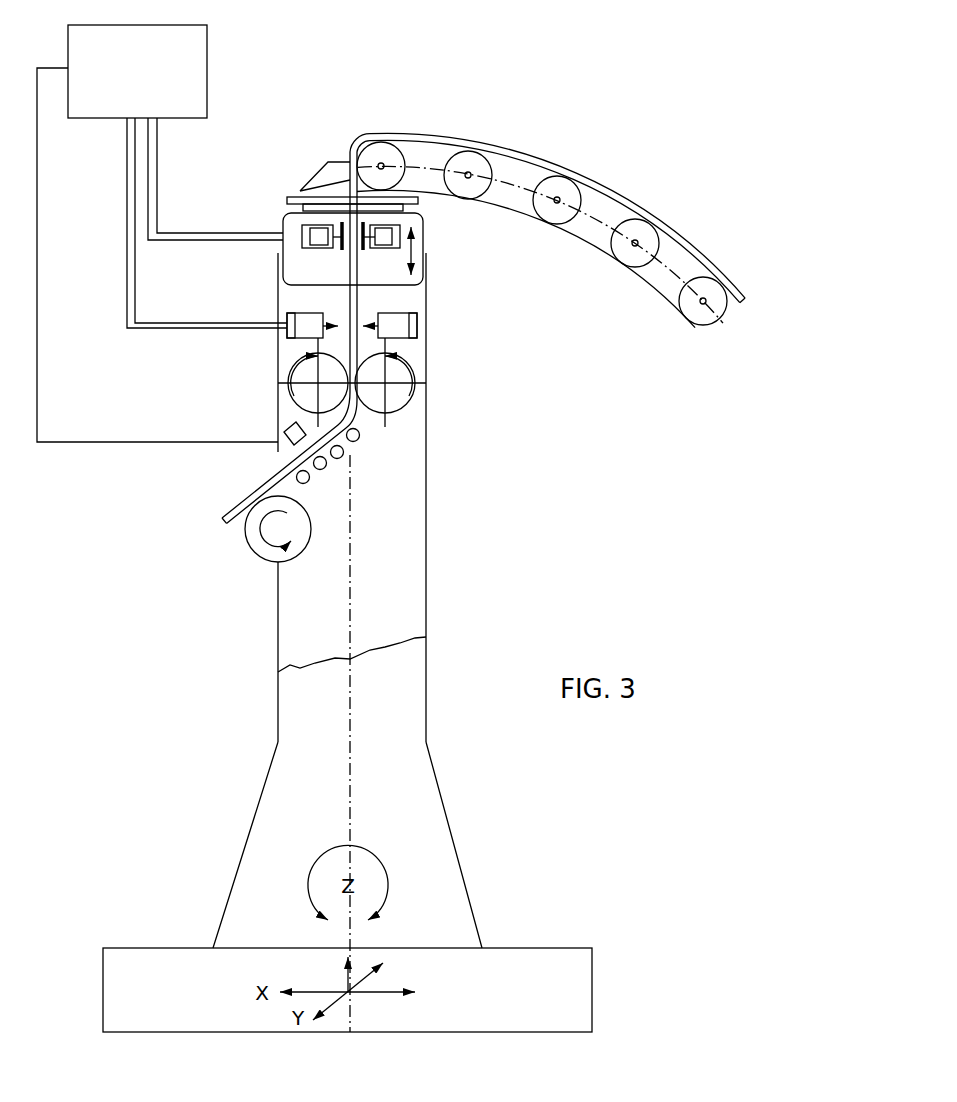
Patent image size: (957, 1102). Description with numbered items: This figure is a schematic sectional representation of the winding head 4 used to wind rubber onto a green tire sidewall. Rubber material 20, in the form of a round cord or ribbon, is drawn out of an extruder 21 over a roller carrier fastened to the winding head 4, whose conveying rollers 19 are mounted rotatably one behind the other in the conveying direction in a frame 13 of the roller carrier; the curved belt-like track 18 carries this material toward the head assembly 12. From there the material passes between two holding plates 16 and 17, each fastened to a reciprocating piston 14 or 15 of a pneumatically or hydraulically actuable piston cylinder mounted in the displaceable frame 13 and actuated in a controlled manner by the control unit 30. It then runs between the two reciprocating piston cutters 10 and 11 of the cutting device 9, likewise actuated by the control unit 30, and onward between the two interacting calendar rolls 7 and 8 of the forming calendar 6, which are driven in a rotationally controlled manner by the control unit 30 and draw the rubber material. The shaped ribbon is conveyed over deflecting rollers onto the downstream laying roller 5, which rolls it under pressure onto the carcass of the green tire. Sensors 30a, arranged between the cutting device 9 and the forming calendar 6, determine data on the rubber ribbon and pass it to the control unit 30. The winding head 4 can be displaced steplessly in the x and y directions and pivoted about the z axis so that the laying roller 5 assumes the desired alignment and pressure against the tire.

The winding head 4 is at (405, 702).
The laying roller 5 is at (264, 547).
The forming calendar 6 is at (350, 382).
The calendar roll 7 is at (305, 393).
The calendar roll 8 is at (397, 373).
The cutting device 9 is at (440, 332).
The reciprocating piston cutter 10 is at (290, 320).
The reciprocating piston cutter 11 is at (410, 323).
The head unit 12 is at (268, 203).
The frame 13 is at (290, 245).
The reciprocating piston 14 is at (312, 220).
The reciprocating piston 15 is at (378, 245).
The holding plate 16 is at (342, 230).
The holding plate 17 is at (377, 217).
The conveyor belt 18 is at (423, 165).
The conveying rollers 19 is at (477, 162).
The rubber material 20 is at (553, 168).
The extruder 21 is at (283, 473).
The control unit 30 is at (162, 233).
The sensors 30a is at (278, 450).